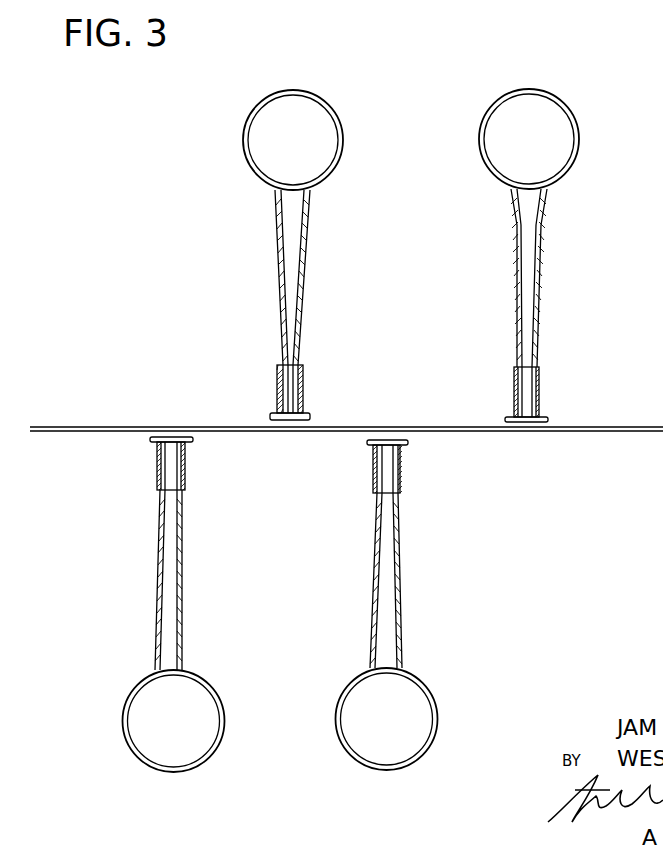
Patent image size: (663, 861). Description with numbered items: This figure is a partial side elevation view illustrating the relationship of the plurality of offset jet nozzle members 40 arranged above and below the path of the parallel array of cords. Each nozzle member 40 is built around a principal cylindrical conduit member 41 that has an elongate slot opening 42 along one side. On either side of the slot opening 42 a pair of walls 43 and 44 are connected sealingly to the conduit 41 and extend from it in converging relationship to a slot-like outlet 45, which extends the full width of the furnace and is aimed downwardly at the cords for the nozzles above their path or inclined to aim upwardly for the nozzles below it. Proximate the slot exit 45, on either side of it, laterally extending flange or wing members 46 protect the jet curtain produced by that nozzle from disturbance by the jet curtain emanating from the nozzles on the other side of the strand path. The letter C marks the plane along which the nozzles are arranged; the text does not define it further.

The nozzle member 40 is at (458, 754).
The principal cylindrical conduit member 41 is at (576, 165).
The elongate slot opening 42 is at (532, 182).
The wall 43 is at (518, 339).
The wall 44 is at (538, 286).
The slot-like outlet 45 is at (525, 422).
The flange or wing member 46 is at (547, 416).
The base plate C is at (633, 432).